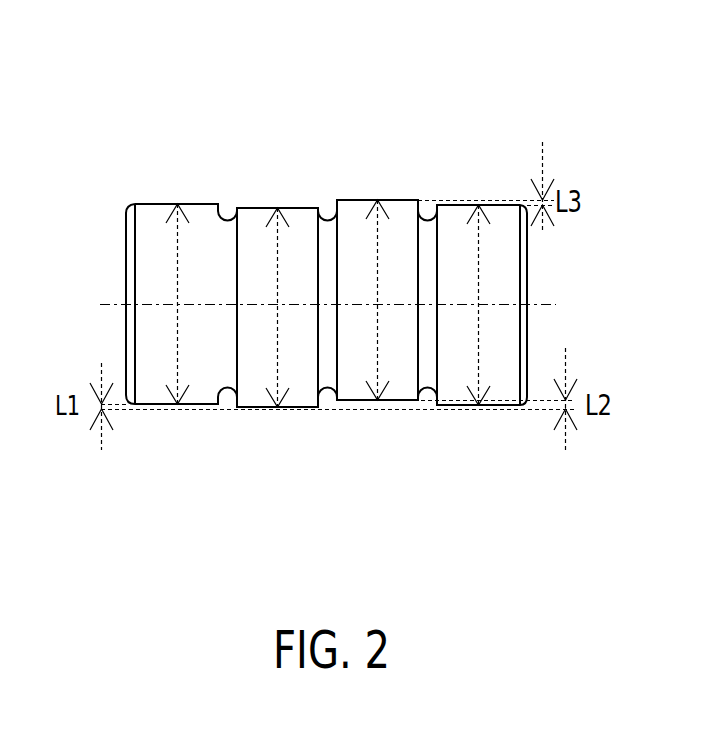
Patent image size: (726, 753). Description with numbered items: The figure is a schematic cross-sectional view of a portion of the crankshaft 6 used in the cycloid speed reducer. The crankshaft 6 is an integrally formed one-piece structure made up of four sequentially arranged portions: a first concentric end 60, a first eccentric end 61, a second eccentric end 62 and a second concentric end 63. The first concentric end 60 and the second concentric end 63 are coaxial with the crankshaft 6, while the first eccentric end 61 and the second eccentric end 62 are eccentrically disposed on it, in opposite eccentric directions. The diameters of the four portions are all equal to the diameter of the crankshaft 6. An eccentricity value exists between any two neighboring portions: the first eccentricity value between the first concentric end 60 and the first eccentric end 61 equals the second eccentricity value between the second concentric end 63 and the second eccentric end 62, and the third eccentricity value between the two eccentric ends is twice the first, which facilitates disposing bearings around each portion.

The crankshaft 6 is at (722, 84).
The first concentric end 60 is at (153, 218).
The first eccentric end 61 is at (255, 222).
The second eccentric end 62 is at (353, 215).
The second concentric end 63 is at (455, 218).